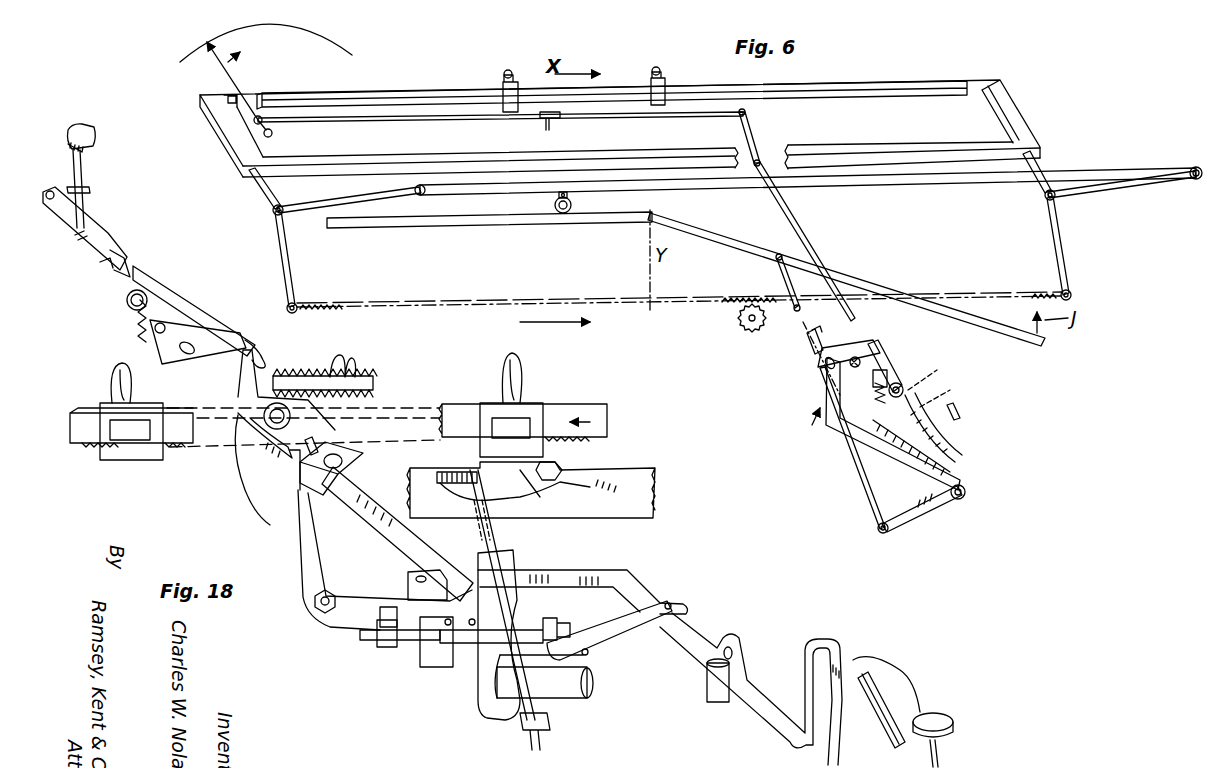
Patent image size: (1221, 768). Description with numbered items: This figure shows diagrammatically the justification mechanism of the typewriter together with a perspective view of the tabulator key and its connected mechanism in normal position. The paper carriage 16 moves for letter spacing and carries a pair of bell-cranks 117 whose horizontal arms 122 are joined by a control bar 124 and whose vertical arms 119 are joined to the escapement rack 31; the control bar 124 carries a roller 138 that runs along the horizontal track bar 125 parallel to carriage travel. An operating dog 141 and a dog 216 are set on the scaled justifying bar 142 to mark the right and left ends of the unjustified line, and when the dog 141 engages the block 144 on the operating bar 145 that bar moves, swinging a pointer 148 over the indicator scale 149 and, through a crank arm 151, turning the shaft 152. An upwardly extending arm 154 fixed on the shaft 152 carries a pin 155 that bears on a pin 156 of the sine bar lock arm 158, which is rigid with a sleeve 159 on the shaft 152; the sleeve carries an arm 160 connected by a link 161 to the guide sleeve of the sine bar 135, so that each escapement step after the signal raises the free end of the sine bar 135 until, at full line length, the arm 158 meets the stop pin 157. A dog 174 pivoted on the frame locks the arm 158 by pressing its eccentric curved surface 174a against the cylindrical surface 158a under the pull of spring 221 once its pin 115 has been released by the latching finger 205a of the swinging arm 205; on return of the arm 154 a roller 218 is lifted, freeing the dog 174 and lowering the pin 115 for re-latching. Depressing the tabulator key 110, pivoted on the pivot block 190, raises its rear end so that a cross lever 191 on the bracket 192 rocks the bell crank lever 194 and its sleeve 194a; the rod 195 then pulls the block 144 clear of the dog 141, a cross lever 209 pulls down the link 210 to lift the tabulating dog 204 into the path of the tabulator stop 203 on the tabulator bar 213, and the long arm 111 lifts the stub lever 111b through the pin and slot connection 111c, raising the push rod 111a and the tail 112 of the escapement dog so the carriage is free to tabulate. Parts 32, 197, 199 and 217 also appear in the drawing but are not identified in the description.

In FIG. 6, the carriage 16 is at (1008, 107).
In FIG. 6, the escapement rack 31 is at (335, 306).
In FIG. 6, the gear 32 is at (745, 332).
In FIG. 18, the tabulator key 110 is at (930, 712).
In FIG. 18, the rearwardly extending arm 111 is at (160, 292).
In FIG. 18, the push rod 111a is at (84, 211).
In FIG. 18, the stub lever 111b is at (78, 238).
In FIG. 18, the pin and slot connection 111c is at (107, 268).
In FIG. 18, the tail of the dog 112 is at (75, 125).
In FIG. 6, the pin 115 is at (820, 353).
In FIG. 6, the bell-cranks 117 is at (262, 194).
In FIG. 6, the vertical arms 119 is at (288, 266).
In FIG. 6, the horizontal arms 122 is at (322, 206).
In FIG. 6, the control bar 124 is at (893, 182).
In FIG. 6, the track bar 125 is at (478, 228).
In FIG. 6, the sine bar 135 is at (865, 288).
In FIG. 6, the roller 138 is at (572, 206).
In FIG. 6, the operating dog 141 is at (510, 78).
In FIG. 18, the operating dog 141 is at (145, 450).
In FIG. 6, the justifying bar 142 is at (440, 93).
In FIG. 18, the justifying bar 142 is at (218, 447).
In FIG. 6, the block 144 is at (558, 118).
In FIG. 18, the block 144 is at (548, 472).
In FIG. 6, the operating bar 145 is at (452, 123).
In FIG. 18, the operating bar 145 is at (655, 480).
In FIG. 6, the pointer 148 is at (228, 63).
In FIG. 6, the indicator scale 149 is at (334, 45).
In FIG. 6, the crank arm 151 is at (752, 128).
In FIG. 6, the shaft 152 is at (967, 492).
In FIG. 6, the arm 154 is at (917, 453).
In FIG. 6, the pin 155 is at (956, 393).
In FIG. 6, the pin 156 is at (942, 376).
In FIG. 6, the stop pin 157 is at (963, 412).
In FIG. 6, the lock arm 158 is at (837, 436).
In FIG. 6, the cylindrical surface 158a is at (827, 435).
In FIG. 6, the sleeve 159 is at (950, 460).
In FIG. 6, the arm 160 is at (920, 513).
In FIG. 6, the link 161 is at (867, 482).
In FIG. 6, the dog 174 is at (862, 345).
In FIG. 18, the dog 174 is at (180, 357).
In FIG. 18, the eccentric curved surface 174a is at (154, 385).
In FIG. 18, the pivot block 190 is at (715, 703).
In FIG. 18, the cross lever 191 is at (623, 653).
In FIG. 18, the bracket 192 is at (593, 677).
In FIG. 18, the bell crank lever 194 is at (470, 690).
In FIG. 18, the sleeve 194a is at (443, 633).
In FIG. 18, the rod 195 is at (500, 530).
In FIG. 18, the housing 197 is at (573, 488).
In FIG. 18, the foot 199 is at (520, 730).
In FIG. 18, the tabulator stop 203 is at (350, 360).
In FIG. 18, the tabulating dog 204 is at (363, 455).
In FIG. 18, the swinging arm 205 is at (293, 428).
In FIG. 6, the latching finger 205a is at (810, 343).
In FIG. 18, the latching finger 205a is at (250, 357).
In FIG. 18, the cross lever 209 is at (563, 567).
In FIG. 18, the link 210 is at (257, 447).
In FIG. 18, the tabulator bar 213 is at (375, 380).
In FIG. 6, the dog 216 is at (660, 78).
In FIG. 18, the dog 216 is at (552, 430).
In FIG. 6, the arm 217 is at (880, 353).
In FIG. 6, the roller 218 is at (907, 387).
In FIG. 6, the spring 221 is at (866, 392).